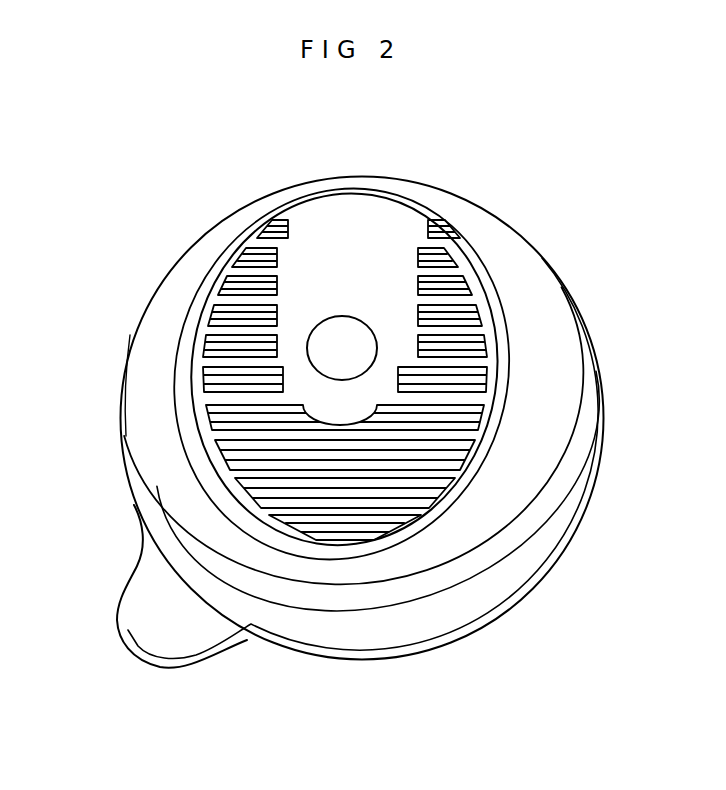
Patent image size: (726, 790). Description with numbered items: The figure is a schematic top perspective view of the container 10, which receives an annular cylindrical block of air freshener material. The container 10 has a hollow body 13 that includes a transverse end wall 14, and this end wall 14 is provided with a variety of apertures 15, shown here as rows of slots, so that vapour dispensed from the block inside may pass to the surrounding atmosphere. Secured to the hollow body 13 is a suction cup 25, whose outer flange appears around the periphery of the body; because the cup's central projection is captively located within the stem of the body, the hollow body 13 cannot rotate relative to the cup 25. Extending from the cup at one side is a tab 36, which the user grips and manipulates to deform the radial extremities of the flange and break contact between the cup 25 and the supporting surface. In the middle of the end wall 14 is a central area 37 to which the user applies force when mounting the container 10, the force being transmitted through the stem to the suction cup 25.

The container 10 is at (578, 243).
The hollow body 13 is at (598, 328).
The end wall 14 is at (486, 230).
The apertures 15 is at (456, 419).
The suction cup 25 is at (575, 548).
The tab 36 is at (147, 605).
The central area 37 is at (360, 305).